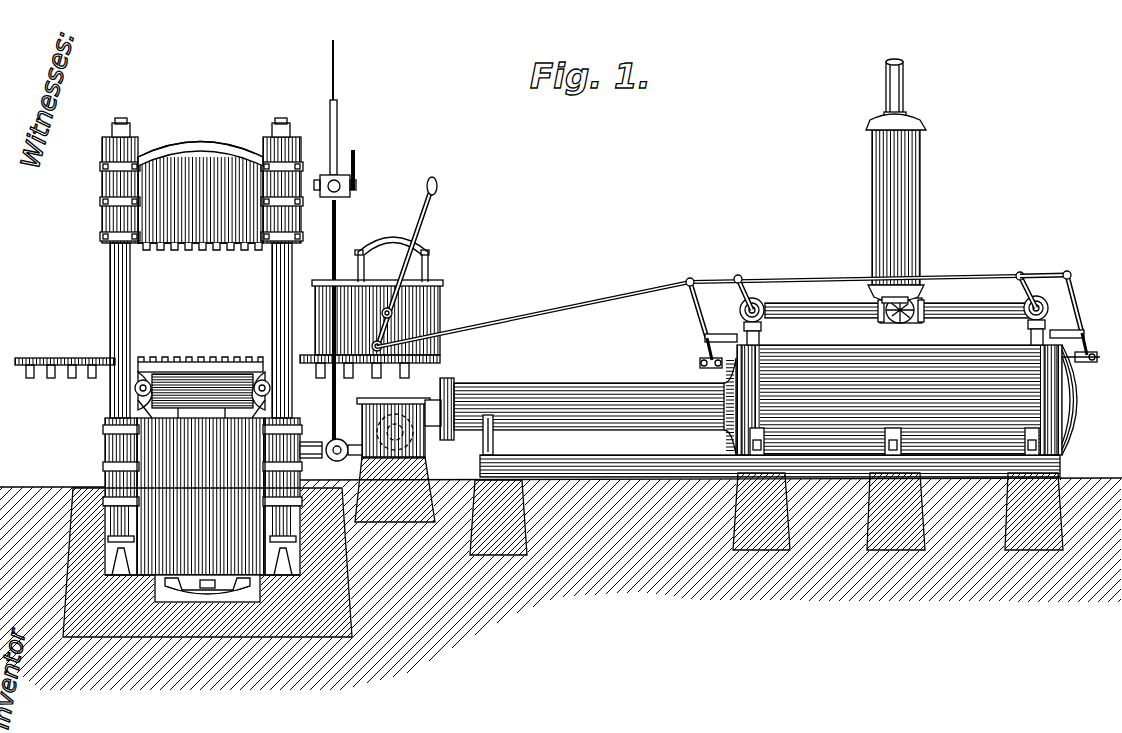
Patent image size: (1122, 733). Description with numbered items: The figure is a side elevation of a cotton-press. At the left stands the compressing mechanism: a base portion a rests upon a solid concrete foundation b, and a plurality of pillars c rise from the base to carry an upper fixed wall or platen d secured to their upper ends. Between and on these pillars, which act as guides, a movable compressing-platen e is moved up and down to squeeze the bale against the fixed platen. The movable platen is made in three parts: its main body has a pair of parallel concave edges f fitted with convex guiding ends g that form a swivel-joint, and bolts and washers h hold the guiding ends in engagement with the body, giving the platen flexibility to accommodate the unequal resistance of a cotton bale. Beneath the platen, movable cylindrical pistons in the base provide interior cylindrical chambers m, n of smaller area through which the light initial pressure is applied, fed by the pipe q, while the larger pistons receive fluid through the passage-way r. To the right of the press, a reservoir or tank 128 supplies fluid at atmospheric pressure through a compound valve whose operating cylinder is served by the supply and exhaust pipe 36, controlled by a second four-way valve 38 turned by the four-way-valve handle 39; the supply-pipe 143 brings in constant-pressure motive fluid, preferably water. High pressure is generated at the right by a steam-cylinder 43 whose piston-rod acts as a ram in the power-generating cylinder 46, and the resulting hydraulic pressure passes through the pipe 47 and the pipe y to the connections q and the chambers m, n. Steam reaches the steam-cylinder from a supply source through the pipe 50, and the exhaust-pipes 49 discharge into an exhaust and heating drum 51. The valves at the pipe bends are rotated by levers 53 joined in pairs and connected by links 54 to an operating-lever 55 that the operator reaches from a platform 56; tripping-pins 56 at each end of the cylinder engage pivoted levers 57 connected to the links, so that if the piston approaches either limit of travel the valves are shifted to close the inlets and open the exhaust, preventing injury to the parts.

The base portion a is at (105, 445).
The foundation b is at (118, 640).
The pillars c is at (110, 292).
The upper fixed wall or platen d is at (196, 265).
The movable compressing-platen e is at (202, 382).
The parallel concave edges f is at (150, 376).
The convex guiding ends g is at (146, 402).
The bolts and washers h is at (202, 391).
The interior cylindrical chamber m is at (180, 412).
The interior cylindrical chamber n is at (222, 412).
The passage-way r is at (315, 446).
The pipe y is at (216, 585).
The pipe q is at (207, 592).
The supply and exhaust pipe 36 is at (334, 390).
The second four-way valve 38 is at (345, 195).
The four-way-valve handle 39 is at (356, 165).
The steam-cylinder 43 is at (907, 400).
The power-generating cylinder 46 is at (614, 386).
The pipe 47 is at (412, 450).
The exhaust-pipes 49 is at (755, 300).
The pipe 50 is at (897, 315).
The exhaust and heating drum 51 is at (874, 178).
The levers 53 is at (738, 288).
The links 54 is at (576, 308).
The operating-lever 55 is at (436, 193).
The platform; tripping-pins 56 is at (70, 358).
The pivoted levers 57 is at (698, 315).
The reservoir or tank 128 is at (375, 412).
The supply-pipe 143 is at (337, 132).